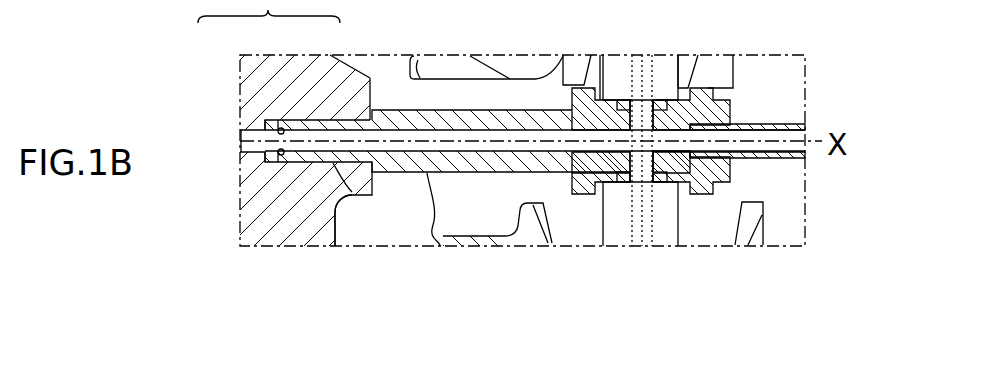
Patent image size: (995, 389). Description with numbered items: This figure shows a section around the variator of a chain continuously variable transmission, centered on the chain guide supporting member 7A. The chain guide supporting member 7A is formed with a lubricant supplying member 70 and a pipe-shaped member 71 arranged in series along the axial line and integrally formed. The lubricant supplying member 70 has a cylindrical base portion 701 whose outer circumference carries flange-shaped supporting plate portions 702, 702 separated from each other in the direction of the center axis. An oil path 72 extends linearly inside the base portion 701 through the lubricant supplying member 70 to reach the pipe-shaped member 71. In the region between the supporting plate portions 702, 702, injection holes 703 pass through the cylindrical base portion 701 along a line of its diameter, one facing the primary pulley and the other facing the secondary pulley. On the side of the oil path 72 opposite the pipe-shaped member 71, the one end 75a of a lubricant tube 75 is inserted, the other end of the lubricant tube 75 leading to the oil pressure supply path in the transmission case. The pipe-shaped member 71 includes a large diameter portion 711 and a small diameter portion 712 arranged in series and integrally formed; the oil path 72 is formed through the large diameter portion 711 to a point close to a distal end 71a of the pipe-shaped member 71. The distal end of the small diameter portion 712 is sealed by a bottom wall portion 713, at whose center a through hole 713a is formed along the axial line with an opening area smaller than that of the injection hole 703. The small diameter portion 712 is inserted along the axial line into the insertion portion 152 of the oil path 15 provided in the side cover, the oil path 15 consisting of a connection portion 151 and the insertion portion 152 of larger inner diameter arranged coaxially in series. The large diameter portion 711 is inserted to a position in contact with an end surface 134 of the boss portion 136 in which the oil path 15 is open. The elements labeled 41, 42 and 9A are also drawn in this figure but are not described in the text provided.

The oil path 15 is at (269, 11).
The connection portion 151 is at (240, 133).
The insertion portion 152 is at (337, 88).
The boss portion 136 is at (367, 78).
The end surface 134 is at (372, 93).
The injection hole 703 is at (633, 136).
The bearing 41 is at (486, 39).
The bearing 42 is at (654, 6).
The rotor 9A is at (597, 80).
The one end of lubricant tube 75a is at (705, 84).
The lubricant tube 75 is at (780, 158).
The through hole 713a is at (277, 128).
The bottom wall portion 713 is at (281, 164).
The distal end of pipe-shaped member 71a is at (240, 157).
The pipe-shaped member 71 is at (458, 277).
The small diameter portion 712 is at (353, 200).
The large diameter portion 711 is at (443, 246).
The oil path 72 is at (496, 154).
The chain guide supporting member 7A is at (536, 210).
The lubricant supplying member 70 is at (688, 193).
The base portion 701 is at (665, 200).
The supporting plate portion 702 is at (587, 195).